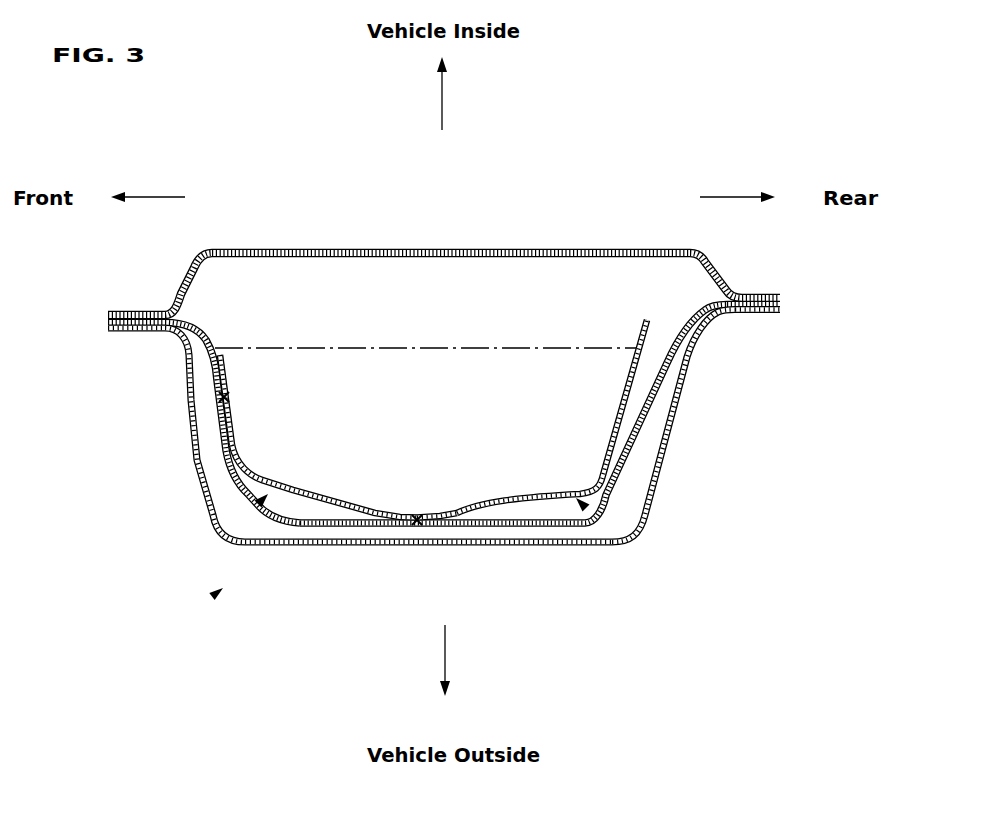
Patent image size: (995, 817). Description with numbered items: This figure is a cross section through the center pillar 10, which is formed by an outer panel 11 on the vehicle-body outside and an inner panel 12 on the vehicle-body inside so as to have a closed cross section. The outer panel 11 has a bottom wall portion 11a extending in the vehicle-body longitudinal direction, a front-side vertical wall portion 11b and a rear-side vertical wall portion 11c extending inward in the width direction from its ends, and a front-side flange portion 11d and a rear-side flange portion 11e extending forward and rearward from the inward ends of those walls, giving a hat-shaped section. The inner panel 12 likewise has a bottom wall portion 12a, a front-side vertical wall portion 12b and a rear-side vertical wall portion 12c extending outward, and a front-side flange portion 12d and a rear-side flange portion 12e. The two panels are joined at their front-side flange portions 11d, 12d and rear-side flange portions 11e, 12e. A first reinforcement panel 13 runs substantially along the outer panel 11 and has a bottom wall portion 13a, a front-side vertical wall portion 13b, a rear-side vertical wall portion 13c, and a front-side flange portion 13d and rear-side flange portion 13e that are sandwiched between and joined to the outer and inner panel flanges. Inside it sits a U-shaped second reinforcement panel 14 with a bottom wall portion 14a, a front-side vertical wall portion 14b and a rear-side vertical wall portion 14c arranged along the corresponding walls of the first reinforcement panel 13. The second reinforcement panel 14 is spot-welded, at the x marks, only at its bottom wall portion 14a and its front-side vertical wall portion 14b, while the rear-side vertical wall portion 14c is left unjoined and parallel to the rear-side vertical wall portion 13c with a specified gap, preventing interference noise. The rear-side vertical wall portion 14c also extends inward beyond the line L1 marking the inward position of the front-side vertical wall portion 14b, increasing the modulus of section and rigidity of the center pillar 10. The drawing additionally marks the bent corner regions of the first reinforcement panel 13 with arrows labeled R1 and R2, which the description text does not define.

The center pillar 10 is at (210, 598).
The outer panel 11 is at (449, 460).
The bottom wall portion 11a is at (360, 548).
The front-side vertical wall portion 11b is at (198, 481).
The rear-side vertical wall portion 11c is at (668, 447).
The front-side flange portion 11d is at (130, 331).
The rear-side flange portion 11e is at (761, 314).
The inner panel 12 is at (449, 250).
The bottom wall portion 12a is at (365, 250).
The front-side vertical wall portion 12b is at (190, 278).
The rear-side vertical wall portion 12c is at (701, 261).
The front-side flange portion 12d is at (130, 313).
The rear-side flange portion 12e is at (758, 295).
The first reinforcement panel 13 is at (444, 450).
The bottom wall portion 13a is at (456, 526).
The front-side vertical wall portion 13b is at (220, 447).
The rear-side vertical wall portion 13c is at (655, 388).
The front-side flange portion 13d is at (107, 323).
The rear-side flange portion 13e is at (782, 303).
The second reinforcement panel 14 is at (433, 422).
The bottom wall portion 14a is at (444, 515).
The front-side vertical wall portion 14b is at (230, 378).
The rear-side vertical wall portion 14c is at (628, 374).
The front bend radius of reinforcement R1 is at (258, 506).
The rear bend radius of reinforcement R2 is at (588, 506).
The line L1 is at (451, 346).